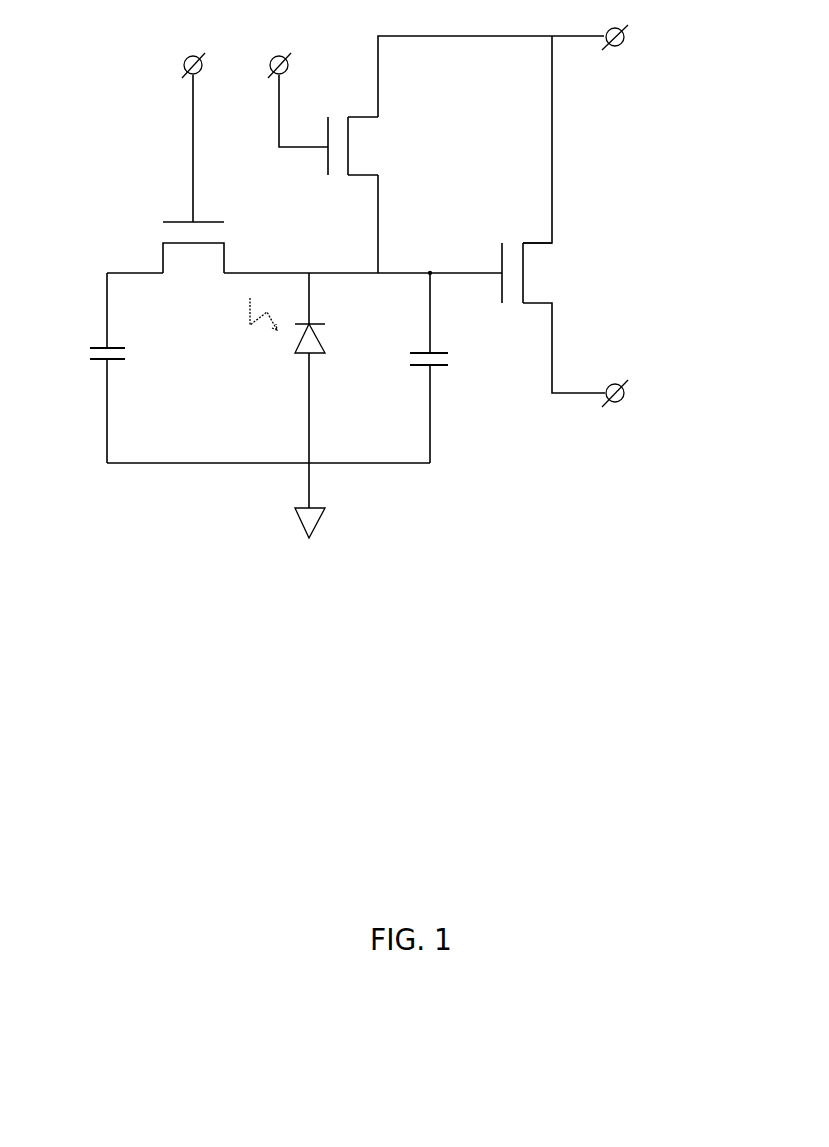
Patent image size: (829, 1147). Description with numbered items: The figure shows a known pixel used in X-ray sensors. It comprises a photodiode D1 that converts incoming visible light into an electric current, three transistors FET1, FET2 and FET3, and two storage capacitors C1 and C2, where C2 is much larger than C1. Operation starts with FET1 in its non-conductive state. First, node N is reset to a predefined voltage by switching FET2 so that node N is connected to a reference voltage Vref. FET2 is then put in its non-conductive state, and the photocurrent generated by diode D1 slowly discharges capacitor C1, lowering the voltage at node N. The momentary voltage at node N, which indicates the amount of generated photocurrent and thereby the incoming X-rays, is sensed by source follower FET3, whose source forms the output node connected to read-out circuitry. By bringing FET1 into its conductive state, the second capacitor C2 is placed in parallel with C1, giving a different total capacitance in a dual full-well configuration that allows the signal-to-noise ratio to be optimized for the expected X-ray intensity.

The first transistor FET1 is at (157, 253).
The second transistor FET2 is at (377, 103).
The source follower transistor FET3 is at (530, 255).
The node N is at (430, 273).
The first storage capacitor C1 is at (444, 359).
The second storage capacitor C2 is at (124, 354).
The photodiode D1 is at (306, 405).
The reference voltage Vref is at (646, 37).